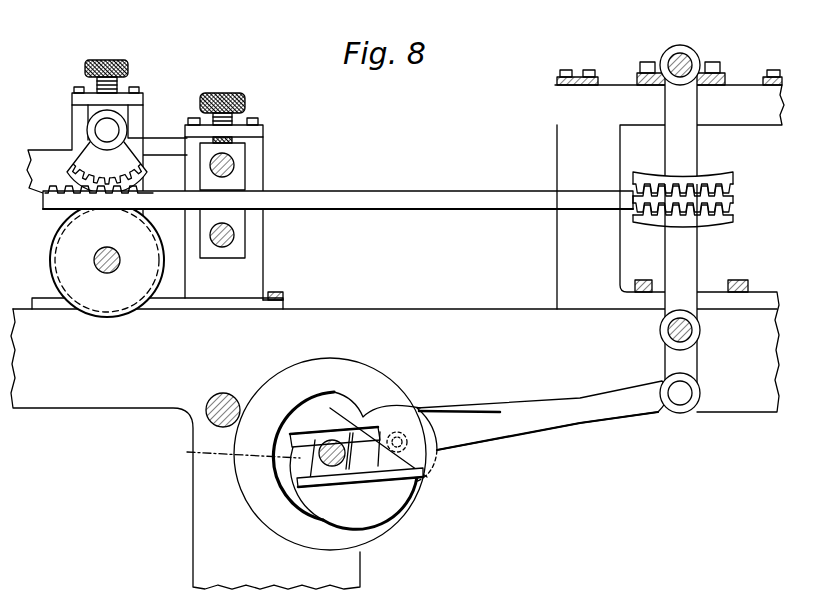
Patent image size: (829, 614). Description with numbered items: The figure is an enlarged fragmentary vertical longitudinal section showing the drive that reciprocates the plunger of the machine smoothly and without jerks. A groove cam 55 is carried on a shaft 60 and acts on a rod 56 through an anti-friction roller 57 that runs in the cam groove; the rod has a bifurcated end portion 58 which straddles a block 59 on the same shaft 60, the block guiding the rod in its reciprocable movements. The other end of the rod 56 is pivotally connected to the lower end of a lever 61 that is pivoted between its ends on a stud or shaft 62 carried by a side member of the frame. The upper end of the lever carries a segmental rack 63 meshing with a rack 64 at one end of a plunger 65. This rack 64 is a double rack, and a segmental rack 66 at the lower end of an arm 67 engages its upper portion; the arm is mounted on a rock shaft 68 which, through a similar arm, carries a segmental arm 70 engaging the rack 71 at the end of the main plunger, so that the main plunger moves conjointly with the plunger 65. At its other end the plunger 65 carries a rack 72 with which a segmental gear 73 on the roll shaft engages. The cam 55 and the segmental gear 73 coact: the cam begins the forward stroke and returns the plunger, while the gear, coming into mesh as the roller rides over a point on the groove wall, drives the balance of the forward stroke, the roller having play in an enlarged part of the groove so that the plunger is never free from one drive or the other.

The cam 55 is at (413, 505).
The rod 56 is at (547, 422).
The anti-friction roller 57 is at (443, 457).
The bifurcated end portion 58 is at (345, 470).
The block 59 is at (333, 468).
The shaft 60 is at (231, 451).
The lever 61 is at (692, 372).
The stud or shaft 62 is at (700, 330).
The segmental rack 63 is at (737, 218).
The rack 64 is at (732, 202).
The plunger 65 is at (380, 191).
The segmental rack 66 is at (703, 185).
The arm 67 is at (683, 130).
The rock shaft 68 is at (681, 46).
The segmental arm 70 is at (427, 477).
The rack 71 is at (340, 432).
The rack 72 is at (44, 207).
The segmental gear 73 is at (67, 172).